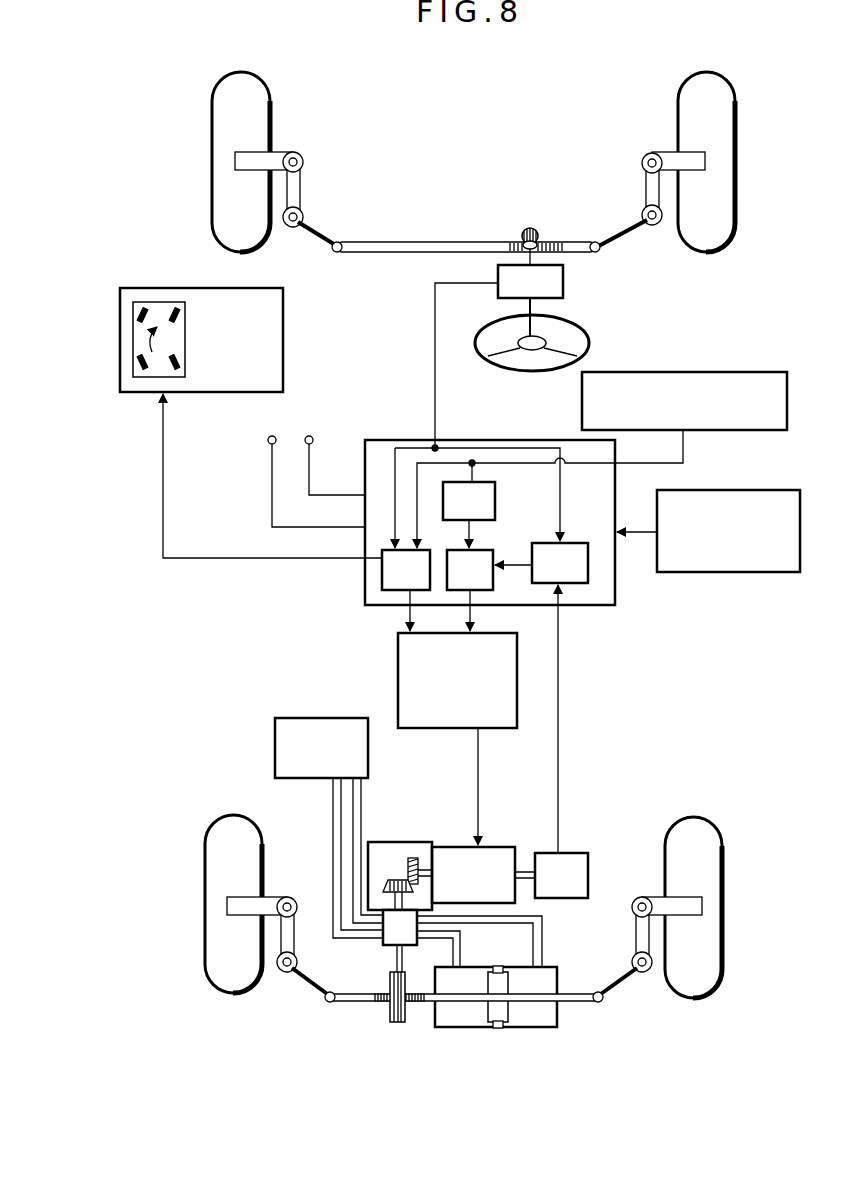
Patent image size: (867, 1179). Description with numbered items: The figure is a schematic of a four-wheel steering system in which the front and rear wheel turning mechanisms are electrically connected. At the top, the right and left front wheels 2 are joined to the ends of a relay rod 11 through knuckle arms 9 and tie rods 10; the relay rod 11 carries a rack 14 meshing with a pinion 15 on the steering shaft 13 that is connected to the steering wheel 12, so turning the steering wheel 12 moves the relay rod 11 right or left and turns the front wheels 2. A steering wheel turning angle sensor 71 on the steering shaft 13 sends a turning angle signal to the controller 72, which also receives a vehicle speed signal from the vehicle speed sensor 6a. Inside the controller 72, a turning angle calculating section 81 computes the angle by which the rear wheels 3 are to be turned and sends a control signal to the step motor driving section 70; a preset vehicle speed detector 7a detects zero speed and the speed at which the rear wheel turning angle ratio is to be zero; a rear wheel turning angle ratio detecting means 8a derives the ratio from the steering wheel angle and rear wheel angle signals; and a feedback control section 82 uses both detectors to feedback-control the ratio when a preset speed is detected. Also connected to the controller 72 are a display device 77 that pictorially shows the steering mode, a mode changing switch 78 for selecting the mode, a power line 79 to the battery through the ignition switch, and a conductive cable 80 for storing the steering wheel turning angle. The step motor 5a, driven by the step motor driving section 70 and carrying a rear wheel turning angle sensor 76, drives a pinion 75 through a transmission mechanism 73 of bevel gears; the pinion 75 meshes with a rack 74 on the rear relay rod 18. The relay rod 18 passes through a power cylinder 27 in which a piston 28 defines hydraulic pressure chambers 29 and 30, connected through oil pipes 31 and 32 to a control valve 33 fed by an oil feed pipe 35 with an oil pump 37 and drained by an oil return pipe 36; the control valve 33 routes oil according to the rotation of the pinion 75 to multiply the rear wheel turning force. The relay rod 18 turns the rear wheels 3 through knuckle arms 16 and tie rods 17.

The front wheels 2 is at (217, 93).
The rear wheels 3 is at (205, 963).
The step motor 5a is at (448, 847).
The vehicle speed sensor 6a is at (722, 377).
The preset vehicle speed detector 7a is at (497, 497).
The rear wheel turning angle ratio detecting means 8a is at (583, 543).
The knuckle arms 9 is at (278, 152).
The tie rods 10 is at (330, 235).
The relay rod 11 is at (417, 240).
The steering wheel 12 is at (590, 343).
The steering shaft 13 is at (537, 303).
The rack 14 is at (552, 243).
The pinion 15 is at (530, 227).
The knuckle arms 16 is at (268, 897).
The tie rods 17 is at (307, 987).
The relay rod 18 is at (580, 1003).
The power cylinder 27 is at (562, 977).
The piston 28 is at (510, 1028).
The hydraulic pressure chamber 29 is at (462, 1028).
The hydraulic pressure chamber 30 is at (548, 1028).
The oil pipe 31 is at (470, 945).
The oil pipe 32 is at (545, 938).
The control valve 33 is at (385, 948).
The oil feed pipe 35 is at (333, 805).
The oil return pipe 36 is at (362, 805).
The oil pump 37 is at (298, 718).
The step motor driving section 70 is at (398, 670).
The steering wheel turning angle sensor 71 is at (565, 280).
The controller 72 is at (497, 457).
The transmission mechanism 73 is at (405, 842).
The rack 74 is at (367, 1000).
The pinion 75 is at (403, 1027).
The rear wheel turning angle sensor 76 is at (572, 853).
The display device 77 is at (283, 340).
The mode changing switch 78 is at (727, 490).
The power line 79 is at (272, 475).
The conductive cable 80 is at (309, 455).
The turning angle calculating section 81 is at (382, 570).
The feedback control section 82 is at (495, 555).